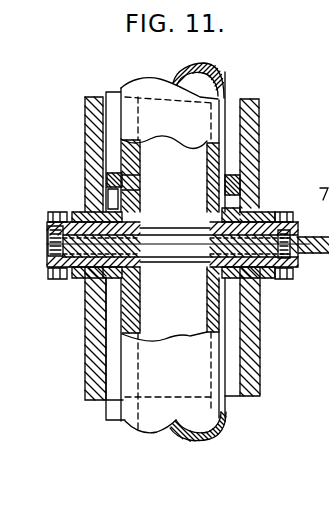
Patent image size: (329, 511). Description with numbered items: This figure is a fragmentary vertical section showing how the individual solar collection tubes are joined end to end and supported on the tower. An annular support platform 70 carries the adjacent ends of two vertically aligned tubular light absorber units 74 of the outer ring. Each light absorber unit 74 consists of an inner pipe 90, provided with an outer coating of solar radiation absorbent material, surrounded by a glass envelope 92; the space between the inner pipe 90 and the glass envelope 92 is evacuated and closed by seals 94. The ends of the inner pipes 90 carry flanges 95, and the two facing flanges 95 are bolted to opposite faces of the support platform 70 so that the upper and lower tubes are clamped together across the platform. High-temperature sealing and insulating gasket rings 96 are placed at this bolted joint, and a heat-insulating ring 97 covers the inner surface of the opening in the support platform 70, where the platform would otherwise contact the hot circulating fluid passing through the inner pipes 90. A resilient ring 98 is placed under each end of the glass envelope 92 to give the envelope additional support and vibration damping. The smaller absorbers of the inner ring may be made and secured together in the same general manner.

The support platform 70 is at (47, 245).
The light absorber unit 74 is at (85, 127).
The inner pipe 90 is at (203, 122).
The glass envelope 92 is at (256, 121).
The seal 94 is at (124, 191).
The flange 95 is at (47, 227).
The gasket ring 96 is at (226, 224).
The heat-insulating ring 97 is at (150, 243).
The resilient ring 98 is at (268, 211).